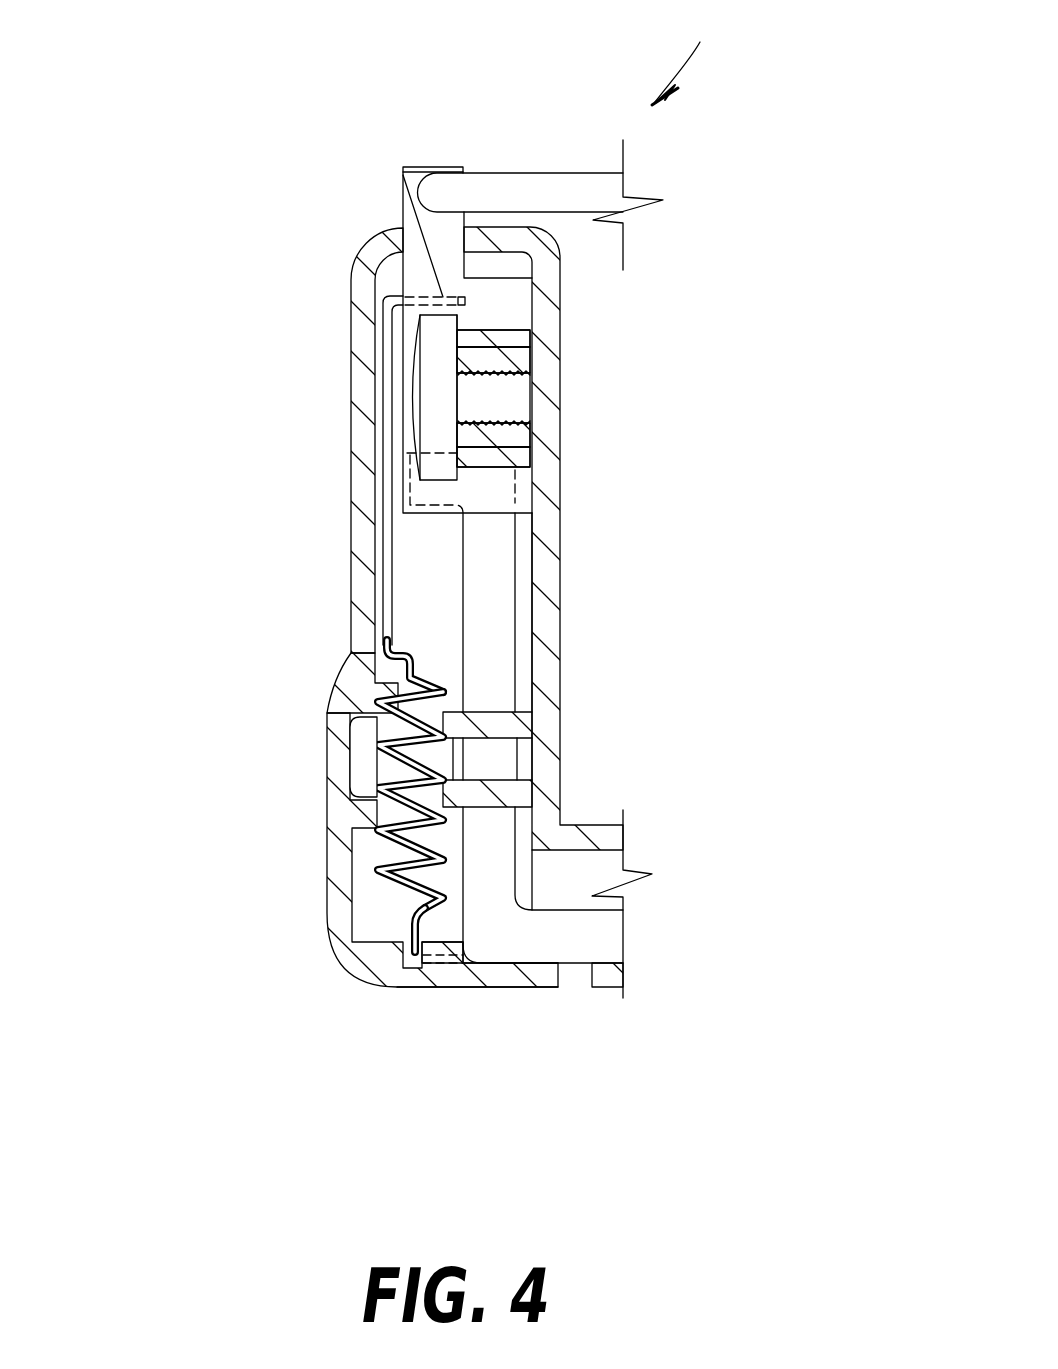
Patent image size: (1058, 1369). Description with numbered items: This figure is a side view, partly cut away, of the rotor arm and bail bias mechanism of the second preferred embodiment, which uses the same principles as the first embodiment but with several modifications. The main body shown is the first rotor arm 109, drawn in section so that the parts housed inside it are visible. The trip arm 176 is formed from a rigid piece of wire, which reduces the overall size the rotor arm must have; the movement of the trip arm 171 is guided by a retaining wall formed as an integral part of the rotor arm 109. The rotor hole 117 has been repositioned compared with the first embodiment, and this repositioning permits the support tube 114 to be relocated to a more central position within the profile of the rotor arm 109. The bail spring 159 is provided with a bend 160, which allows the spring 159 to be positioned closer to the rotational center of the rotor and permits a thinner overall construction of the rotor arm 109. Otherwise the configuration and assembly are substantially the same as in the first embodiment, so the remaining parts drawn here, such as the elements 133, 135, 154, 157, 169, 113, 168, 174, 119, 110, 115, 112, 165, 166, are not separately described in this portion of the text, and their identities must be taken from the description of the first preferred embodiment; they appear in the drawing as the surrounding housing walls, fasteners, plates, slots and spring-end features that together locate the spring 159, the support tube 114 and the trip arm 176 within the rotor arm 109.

The first rotor arm 109 is at (707, 54).
The mounting arm 133 is at (517, 190).
The plate 135 is at (440, 193).
The plate top edge 154 is at (403, 178).
The housing cap 157 is at (418, 255).
The slot 169 is at (465, 301).
The screw 113 is at (507, 355).
The sleeve 168 is at (388, 413).
The hidden slot 174 is at (428, 493).
The nut plate 119 is at (533, 460).
The housing 110 is at (360, 587).
The trip arm 171 is at (530, 637).
The pin 115 is at (437, 547).
The support tube 114 is at (510, 728).
The bend 160 is at (392, 648).
The bail spring 159 is at (372, 878).
The cavity 112 is at (360, 762).
The wire end 165 is at (405, 938).
The retainer block 166 is at (452, 962).
The rotor hole 117 is at (435, 963).
The trip arm 176 is at (587, 928).